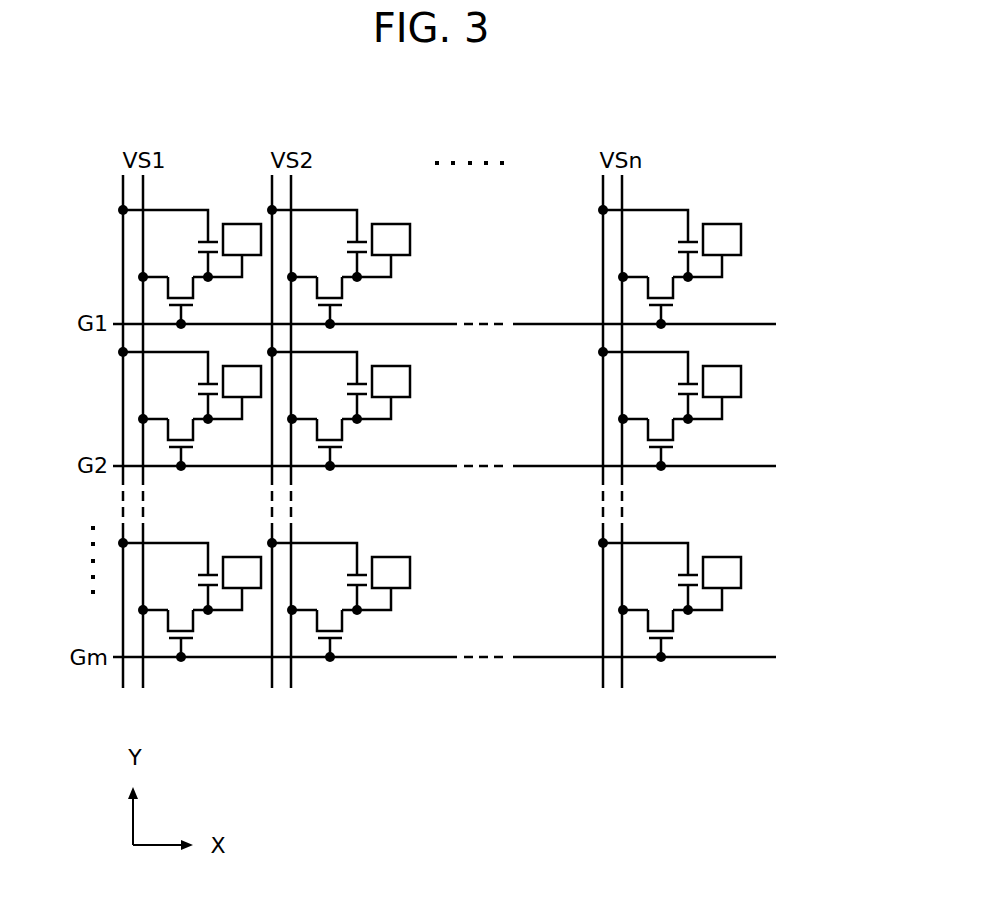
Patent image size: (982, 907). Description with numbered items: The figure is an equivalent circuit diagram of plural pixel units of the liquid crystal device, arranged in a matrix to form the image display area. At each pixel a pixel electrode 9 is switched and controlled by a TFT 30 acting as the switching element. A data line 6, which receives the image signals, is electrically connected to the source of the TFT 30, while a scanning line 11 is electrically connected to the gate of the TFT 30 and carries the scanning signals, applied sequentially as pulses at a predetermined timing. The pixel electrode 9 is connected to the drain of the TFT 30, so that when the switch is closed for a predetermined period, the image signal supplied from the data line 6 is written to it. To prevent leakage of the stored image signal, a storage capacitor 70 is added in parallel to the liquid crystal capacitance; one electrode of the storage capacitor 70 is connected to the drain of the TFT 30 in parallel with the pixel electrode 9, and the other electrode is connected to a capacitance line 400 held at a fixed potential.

The capacitance line 400 is at (123, 189).
The data line 6 is at (143, 187).
The storage capacitor 70 is at (197, 248).
The TFT 30 is at (160, 291).
The pixel electrode 9 is at (741, 250).
The scanning line 11 is at (762, 323).